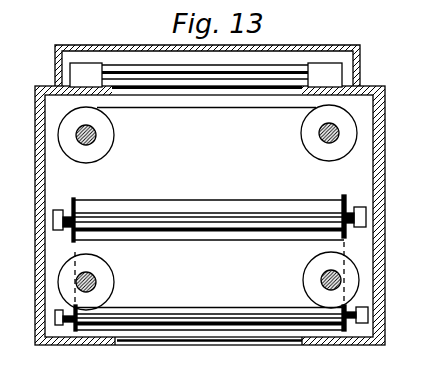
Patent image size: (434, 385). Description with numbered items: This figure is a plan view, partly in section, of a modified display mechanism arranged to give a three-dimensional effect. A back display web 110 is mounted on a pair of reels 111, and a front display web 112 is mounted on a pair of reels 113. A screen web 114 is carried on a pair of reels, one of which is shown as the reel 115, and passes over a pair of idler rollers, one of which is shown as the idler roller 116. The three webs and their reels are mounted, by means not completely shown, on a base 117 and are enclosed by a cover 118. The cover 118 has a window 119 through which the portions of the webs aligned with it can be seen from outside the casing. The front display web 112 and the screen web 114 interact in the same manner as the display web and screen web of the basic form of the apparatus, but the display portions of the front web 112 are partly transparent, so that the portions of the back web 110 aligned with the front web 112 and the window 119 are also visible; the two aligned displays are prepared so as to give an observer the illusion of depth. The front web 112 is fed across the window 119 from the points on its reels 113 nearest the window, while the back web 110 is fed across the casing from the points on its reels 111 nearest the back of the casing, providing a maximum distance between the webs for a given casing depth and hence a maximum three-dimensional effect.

The back display web 110 is at (207, 110).
The reels 111 is at (104, 152).
The front display web 112 is at (213, 298).
The reels 113 is at (107, 280).
The screen web 114 is at (336, 249).
The reel 115 is at (349, 197).
The idler roller 116 is at (347, 329).
The base 117 is at (368, 86).
The cover 118 is at (352, 342).
The window 119 is at (304, 343).